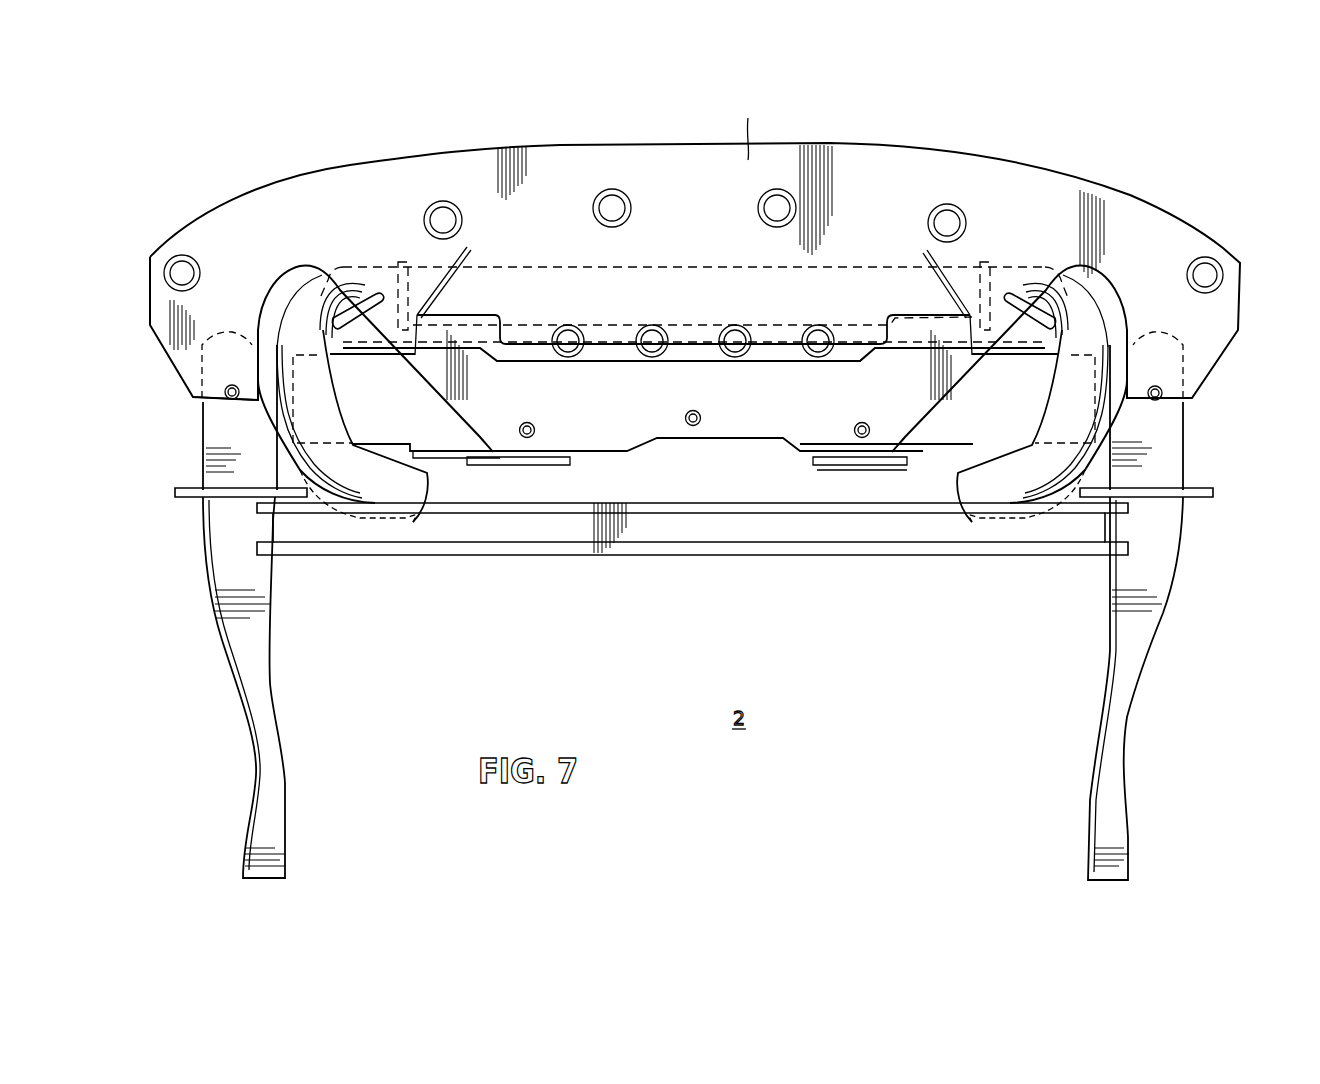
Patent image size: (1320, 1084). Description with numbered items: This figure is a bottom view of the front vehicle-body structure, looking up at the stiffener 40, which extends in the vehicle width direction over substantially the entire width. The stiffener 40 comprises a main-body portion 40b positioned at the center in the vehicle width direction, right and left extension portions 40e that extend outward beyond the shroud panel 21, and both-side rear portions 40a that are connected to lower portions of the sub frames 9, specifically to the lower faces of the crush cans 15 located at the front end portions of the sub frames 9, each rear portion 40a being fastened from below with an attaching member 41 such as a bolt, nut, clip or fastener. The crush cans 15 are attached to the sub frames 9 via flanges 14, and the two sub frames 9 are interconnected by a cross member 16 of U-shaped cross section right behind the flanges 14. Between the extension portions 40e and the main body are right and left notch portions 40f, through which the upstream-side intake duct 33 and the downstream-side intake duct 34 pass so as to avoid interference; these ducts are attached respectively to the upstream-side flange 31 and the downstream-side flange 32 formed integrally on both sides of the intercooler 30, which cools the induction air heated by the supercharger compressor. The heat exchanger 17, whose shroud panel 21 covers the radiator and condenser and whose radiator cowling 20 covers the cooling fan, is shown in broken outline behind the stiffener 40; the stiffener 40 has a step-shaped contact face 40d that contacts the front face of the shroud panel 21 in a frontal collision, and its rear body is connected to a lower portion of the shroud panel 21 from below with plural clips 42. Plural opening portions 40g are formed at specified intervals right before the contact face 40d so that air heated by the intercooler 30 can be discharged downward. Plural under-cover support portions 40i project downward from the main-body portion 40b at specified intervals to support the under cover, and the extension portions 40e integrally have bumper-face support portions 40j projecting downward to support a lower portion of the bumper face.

The stiffener 40 is at (680, 138).
The main-body portion 40b is at (748, 124).
The extension portion 40e is at (175, 308).
The bumper-face support portion 40j is at (185, 255).
The under-cover support portion 40i is at (434, 210).
The rear portion 40a is at (190, 398).
The notch portion 40f is at (283, 277).
The intercooler 30 is at (663, 265).
The heat exchanger 17 is at (760, 330).
The contact face 40d is at (693, 355).
The opening portion 40g is at (636, 335).
The clip 42 is at (527, 422).
The attaching member 41 is at (232, 400).
The upstream-side flange 31 is at (347, 342).
The downstream-side flange 32 is at (1028, 340).
The shroud panel 21 is at (447, 420).
The radiator cowling 20 is at (808, 460).
The upstream-side intake duct 33 is at (377, 480).
The downstream-side intake duct 34 is at (1030, 478).
The cross member 16 is at (663, 555).
The crush can 15 is at (200, 431).
The flange 14 is at (185, 489).
The sub frame 9 is at (255, 750).